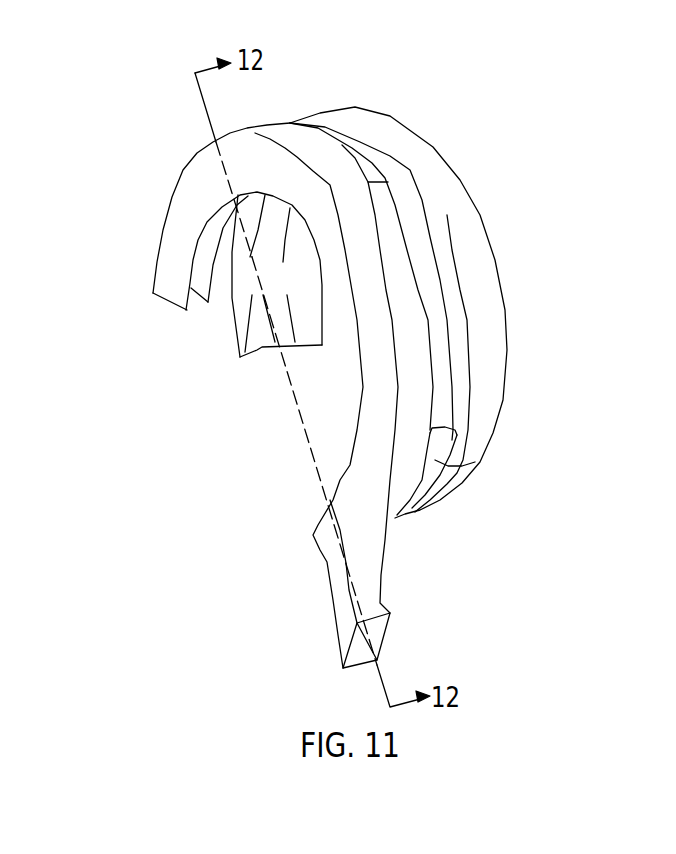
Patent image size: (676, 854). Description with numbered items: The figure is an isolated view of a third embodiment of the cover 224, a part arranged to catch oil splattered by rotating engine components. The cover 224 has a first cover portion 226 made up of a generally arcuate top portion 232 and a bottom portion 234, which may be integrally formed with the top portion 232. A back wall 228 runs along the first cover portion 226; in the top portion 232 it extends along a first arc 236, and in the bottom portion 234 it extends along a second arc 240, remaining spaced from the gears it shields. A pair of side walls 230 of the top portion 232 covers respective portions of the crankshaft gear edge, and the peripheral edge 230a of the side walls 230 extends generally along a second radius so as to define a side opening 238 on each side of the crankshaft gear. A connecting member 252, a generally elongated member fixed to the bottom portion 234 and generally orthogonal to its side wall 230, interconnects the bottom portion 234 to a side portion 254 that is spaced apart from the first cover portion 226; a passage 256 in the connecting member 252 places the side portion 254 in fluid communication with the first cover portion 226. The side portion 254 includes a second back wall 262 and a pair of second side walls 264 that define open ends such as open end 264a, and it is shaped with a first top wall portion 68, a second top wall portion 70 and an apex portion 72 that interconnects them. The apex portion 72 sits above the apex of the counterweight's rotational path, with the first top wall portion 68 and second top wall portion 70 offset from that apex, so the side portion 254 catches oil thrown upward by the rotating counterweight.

The cover 224 is at (560, 86).
The first cover portion 226 is at (164, 88).
The back wall 228 is at (258, 375).
The side walls 230 is at (194, 276).
The peripheral edge 230a is at (191, 300).
The top portion 232 is at (330, 69).
The bottom portion 234 is at (416, 384).
The first arc 236 is at (254, 252).
The side opening 238 is at (211, 478).
The second arc 240 is at (395, 637).
The connecting member 252 is at (469, 474).
The side portion 254 is at (462, 312).
The passage 256 is at (497, 431).
The second back wall 262 is at (424, 276).
The second side walls 264 is at (429, 317).
The open end 264a is at (281, 371).
The first top wall portion 68 is at (340, 368).
The second top wall portion 70 is at (590, 388).
The apex portion 72 is at (516, 161).